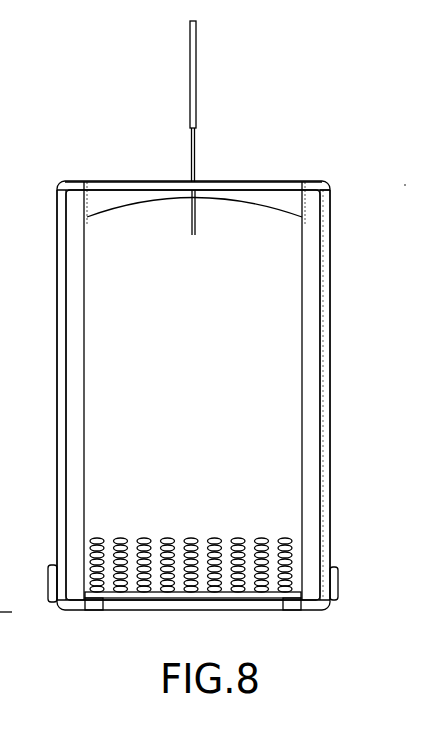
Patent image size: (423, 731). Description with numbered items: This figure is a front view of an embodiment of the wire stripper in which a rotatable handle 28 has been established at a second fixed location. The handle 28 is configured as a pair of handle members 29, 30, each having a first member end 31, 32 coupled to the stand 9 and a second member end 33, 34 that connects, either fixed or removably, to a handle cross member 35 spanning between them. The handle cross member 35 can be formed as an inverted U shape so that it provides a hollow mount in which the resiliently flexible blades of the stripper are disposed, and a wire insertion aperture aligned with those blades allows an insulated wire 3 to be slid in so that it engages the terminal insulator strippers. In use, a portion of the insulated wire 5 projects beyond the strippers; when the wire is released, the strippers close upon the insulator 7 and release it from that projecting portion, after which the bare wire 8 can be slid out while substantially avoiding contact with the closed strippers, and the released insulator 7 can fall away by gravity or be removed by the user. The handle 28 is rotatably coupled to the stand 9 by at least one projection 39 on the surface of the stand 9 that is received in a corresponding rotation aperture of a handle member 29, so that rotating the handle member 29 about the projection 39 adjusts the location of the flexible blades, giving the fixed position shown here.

The insulated wire 3 is at (197, 118).
The portion of the insulated wire 5 is at (203, 212).
The insulator 7 is at (188, 222).
The wire 8 is at (195, 170).
The stand 9 is at (292, 605).
The handle 28 is at (330, 181).
The handle member 29 is at (57, 288).
The handle member 30 is at (330, 283).
The first member end 31 is at (57, 545).
The first member end 32 is at (330, 510).
The second member end 33 is at (60, 180).
The second member end 34 is at (328, 198).
The handle cross member 35 is at (283, 181).
The projection 39 is at (47, 577).